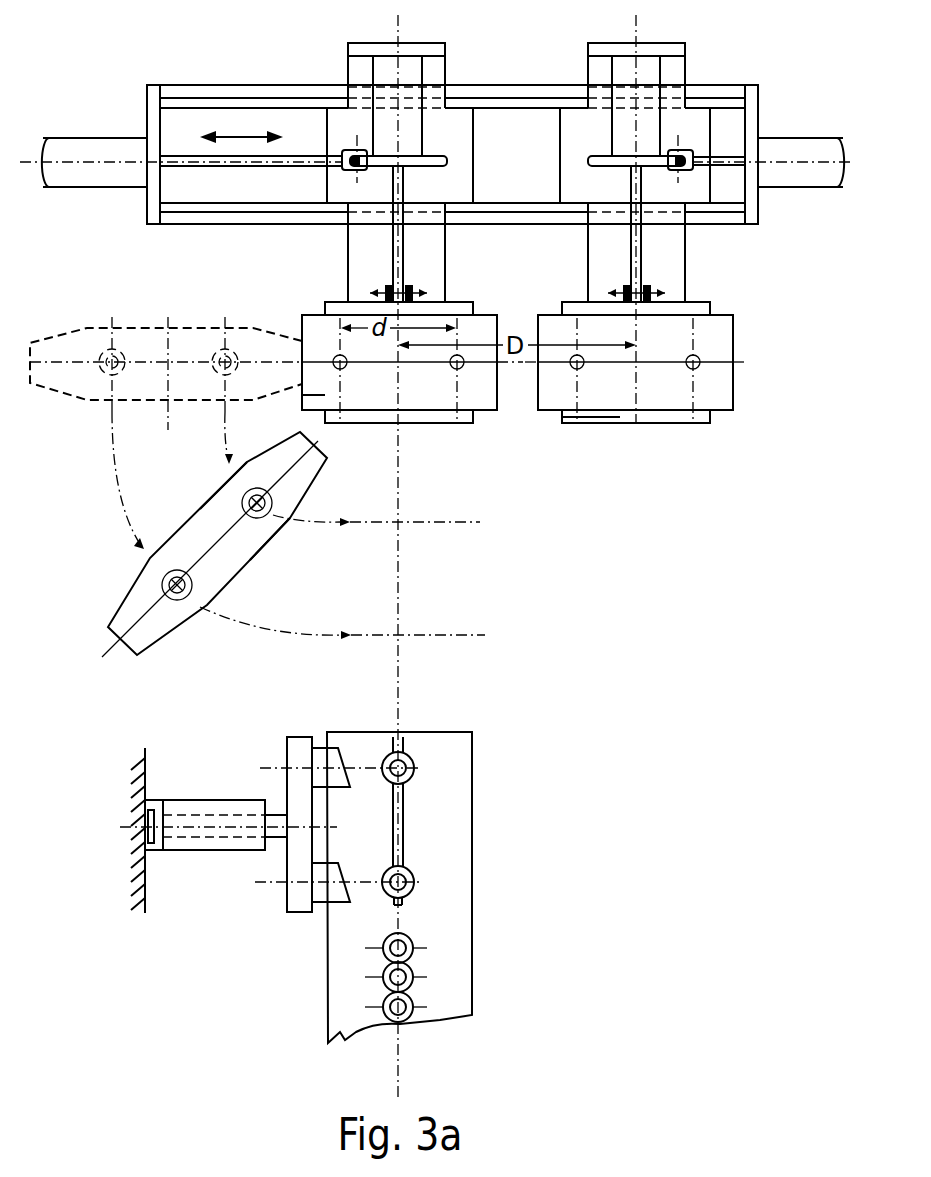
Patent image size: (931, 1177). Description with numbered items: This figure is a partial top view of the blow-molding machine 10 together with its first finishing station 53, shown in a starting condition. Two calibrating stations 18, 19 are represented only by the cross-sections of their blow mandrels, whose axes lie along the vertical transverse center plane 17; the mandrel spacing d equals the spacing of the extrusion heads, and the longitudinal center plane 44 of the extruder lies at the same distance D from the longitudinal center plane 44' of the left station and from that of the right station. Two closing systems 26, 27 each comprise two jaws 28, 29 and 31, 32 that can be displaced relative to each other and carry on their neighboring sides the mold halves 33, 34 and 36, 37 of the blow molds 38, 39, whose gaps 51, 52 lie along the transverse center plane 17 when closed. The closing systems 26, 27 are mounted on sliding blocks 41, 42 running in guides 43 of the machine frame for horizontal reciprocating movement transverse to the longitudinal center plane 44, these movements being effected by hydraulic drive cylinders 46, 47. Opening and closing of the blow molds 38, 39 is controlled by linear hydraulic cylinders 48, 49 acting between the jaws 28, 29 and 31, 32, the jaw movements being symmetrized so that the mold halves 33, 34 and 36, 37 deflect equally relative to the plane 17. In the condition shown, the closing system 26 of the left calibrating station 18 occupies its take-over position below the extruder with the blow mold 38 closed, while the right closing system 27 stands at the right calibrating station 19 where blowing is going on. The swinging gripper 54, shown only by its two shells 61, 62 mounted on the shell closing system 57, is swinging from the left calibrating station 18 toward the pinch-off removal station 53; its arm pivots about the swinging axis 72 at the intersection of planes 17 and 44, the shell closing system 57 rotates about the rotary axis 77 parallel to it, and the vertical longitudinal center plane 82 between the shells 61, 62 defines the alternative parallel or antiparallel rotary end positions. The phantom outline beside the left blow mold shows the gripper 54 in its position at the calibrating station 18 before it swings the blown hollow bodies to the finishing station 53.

The blow-molding machine 10 is at (549, 529).
The vertical transverse center plane 17 is at (505, 365).
The calibrating station 18 is at (114, 350).
The calibrating station 19 is at (697, 348).
The closing system 26 is at (431, 430).
The closing system 27 is at (669, 430).
The jaw 28 is at (350, 427).
The jaw 29 is at (348, 308).
The jaw 31 is at (612, 417).
The jaw 32 is at (582, 305).
The mold half 33 is at (313, 322).
The mold half 34 is at (313, 400).
The mold half 36 is at (718, 332).
The mold half 37 is at (718, 395).
The blow mold 38 is at (483, 310).
The blow mold 39 is at (548, 305).
The sliding block 41 is at (456, 139).
The sliding block 42 is at (570, 178).
The guides 43 is at (510, 80).
The vertical longitudinal center plane 44 is at (424, 557).
The longitudinal center plane 44' is at (163, 345).
The hydraulic drive cylinder 46 is at (100, 150).
The hydraulic drive cylinder 47 is at (800, 148).
The linear hydraulic cylinder 48 is at (387, 70).
The linear hydraulic cylinder 49 is at (650, 73).
The gap 51 is at (415, 365).
The gap 52 is at (608, 365).
The first finishing station 53 is at (279, 754).
The swinging gripper 54 is at (208, 550).
The shell closing system 57 is at (141, 573).
The shell 61 is at (200, 525).
The shell 62 is at (227, 560).
The swinging axis 72 is at (395, 367).
The rotary axis 77 is at (165, 362).
The vertical longitudinal center plane 82 is at (195, 360).